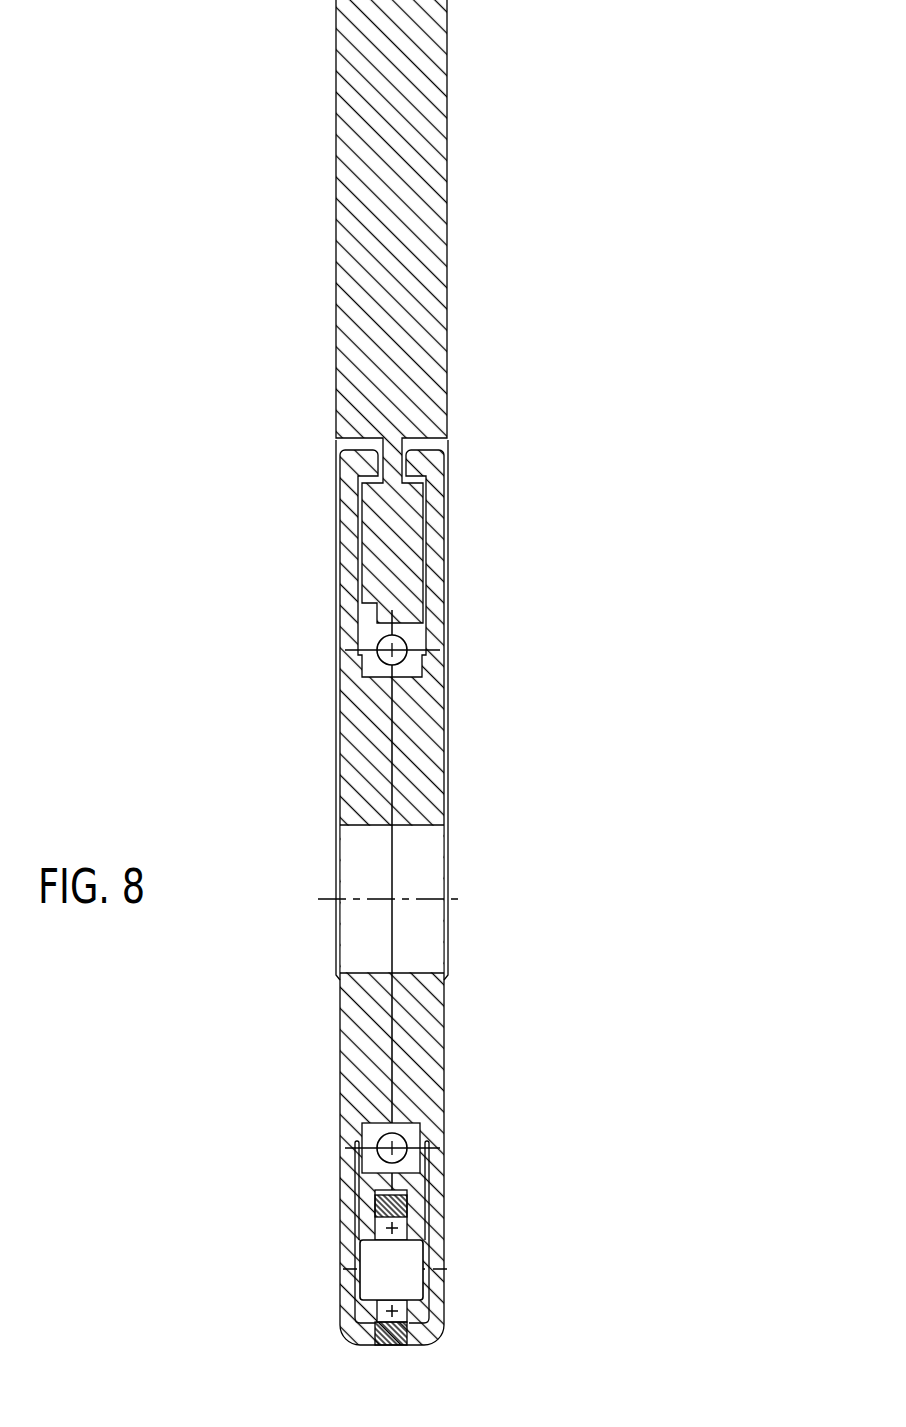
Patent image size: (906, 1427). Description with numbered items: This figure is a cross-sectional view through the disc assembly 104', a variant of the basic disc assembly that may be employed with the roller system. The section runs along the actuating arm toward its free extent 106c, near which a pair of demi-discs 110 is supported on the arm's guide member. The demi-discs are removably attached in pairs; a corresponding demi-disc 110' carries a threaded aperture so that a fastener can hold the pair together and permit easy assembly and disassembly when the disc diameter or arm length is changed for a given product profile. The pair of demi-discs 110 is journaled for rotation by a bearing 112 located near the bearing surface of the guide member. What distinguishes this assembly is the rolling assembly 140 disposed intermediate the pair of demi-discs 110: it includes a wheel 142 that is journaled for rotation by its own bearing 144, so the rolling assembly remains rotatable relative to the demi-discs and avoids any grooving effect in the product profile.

The disc assembly 104' is at (504, 672).
The free extent 106c is at (438, 133).
The demi-disc 110 is at (428, 897).
The corresponding demi-disc 110' is at (335, 710).
The bearing 112 is at (417, 640).
The rolling assembly 140 is at (362, 1260).
The wheel 142 is at (413, 1285).
The bearing 144 is at (400, 1235).